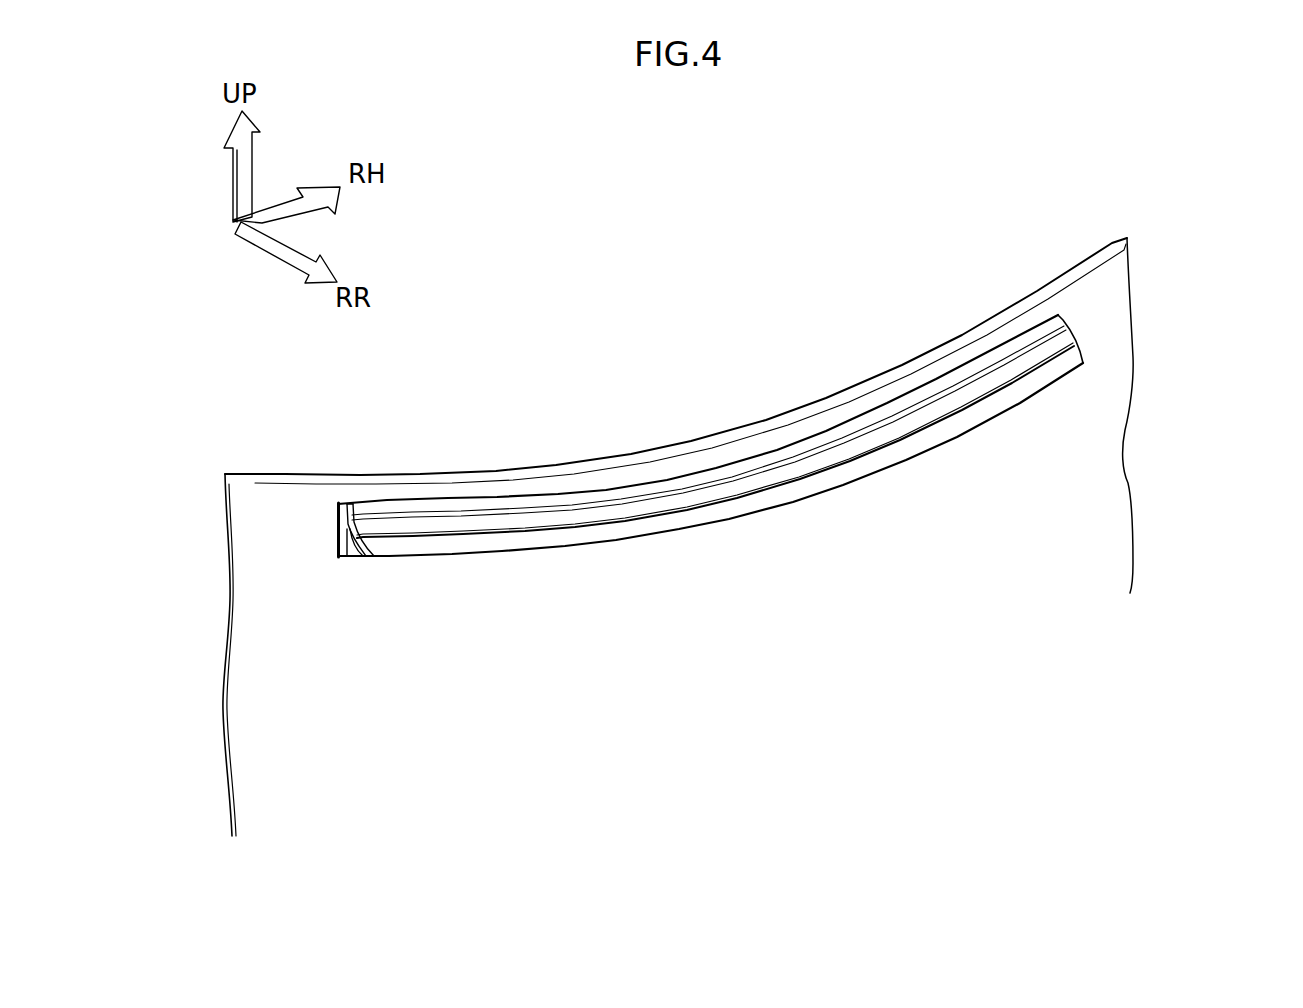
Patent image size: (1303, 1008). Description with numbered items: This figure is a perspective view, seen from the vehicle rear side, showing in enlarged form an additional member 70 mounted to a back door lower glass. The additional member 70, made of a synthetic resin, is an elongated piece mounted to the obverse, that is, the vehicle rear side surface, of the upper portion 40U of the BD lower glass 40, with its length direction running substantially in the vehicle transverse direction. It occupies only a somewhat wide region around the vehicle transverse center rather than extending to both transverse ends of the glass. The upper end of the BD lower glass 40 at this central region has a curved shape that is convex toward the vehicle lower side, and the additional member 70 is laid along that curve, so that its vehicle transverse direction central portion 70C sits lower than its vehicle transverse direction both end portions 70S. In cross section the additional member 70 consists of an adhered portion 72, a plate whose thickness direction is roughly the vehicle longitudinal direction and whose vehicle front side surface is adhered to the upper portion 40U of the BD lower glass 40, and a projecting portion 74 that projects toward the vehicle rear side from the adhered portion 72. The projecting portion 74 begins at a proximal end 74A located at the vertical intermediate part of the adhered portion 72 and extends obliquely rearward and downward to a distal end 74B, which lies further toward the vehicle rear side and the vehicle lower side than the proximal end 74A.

The BD lower glass 40 is at (797, 405).
The upper portion of BD lower glass 40U is at (1112, 309).
The additional member 70 is at (760, 553).
The vehicle transverse direction both end portions of additional member 70S is at (1023, 336).
The vehicle transverse direction central portion of additional member 70C is at (712, 466).
The adhered portion 72 is at (338, 538).
The projecting portion 74 is at (457, 543).
The proximal end of projecting portion 74A is at (383, 518).
The distal end of projecting portion 74B is at (370, 557).